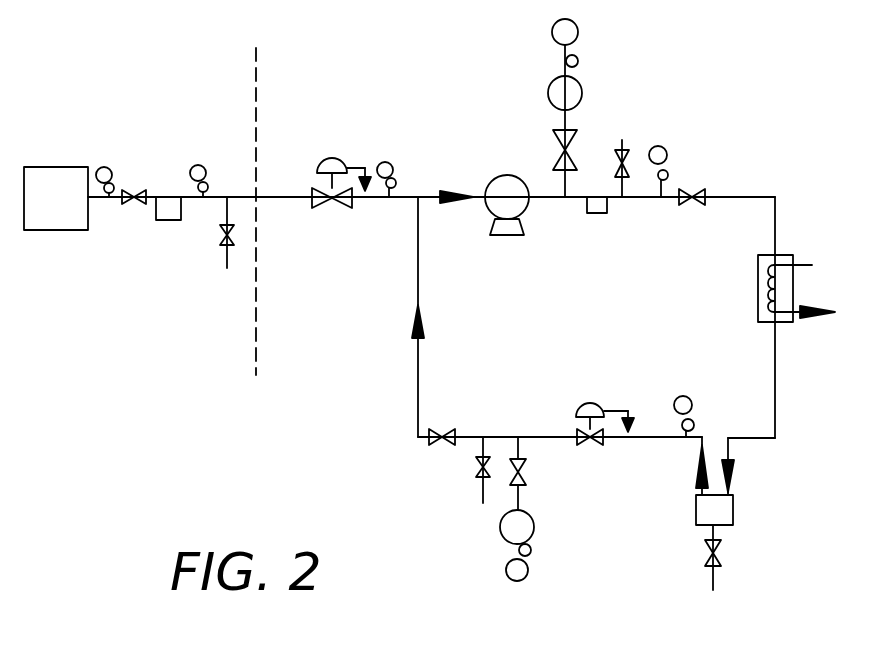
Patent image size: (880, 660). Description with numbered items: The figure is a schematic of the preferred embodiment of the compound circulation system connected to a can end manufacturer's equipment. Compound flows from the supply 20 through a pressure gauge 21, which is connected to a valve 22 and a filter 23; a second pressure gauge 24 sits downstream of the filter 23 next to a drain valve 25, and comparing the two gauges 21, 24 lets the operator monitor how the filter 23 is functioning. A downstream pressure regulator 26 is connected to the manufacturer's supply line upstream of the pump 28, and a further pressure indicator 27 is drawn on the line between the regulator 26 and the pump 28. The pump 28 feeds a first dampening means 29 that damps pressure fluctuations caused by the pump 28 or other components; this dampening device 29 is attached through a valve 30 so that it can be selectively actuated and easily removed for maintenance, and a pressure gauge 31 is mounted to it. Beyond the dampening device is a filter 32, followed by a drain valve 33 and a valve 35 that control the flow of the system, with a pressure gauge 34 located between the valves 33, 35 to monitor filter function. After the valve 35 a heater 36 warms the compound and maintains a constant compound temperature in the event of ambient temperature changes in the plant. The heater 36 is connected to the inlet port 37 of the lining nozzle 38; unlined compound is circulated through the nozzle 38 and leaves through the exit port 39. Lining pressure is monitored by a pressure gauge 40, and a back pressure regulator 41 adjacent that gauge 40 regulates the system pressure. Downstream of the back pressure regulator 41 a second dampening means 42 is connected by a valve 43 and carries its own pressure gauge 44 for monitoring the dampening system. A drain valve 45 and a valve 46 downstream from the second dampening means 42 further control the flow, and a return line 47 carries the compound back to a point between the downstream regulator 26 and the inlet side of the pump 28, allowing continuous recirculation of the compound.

The supply 20 is at (60, 232).
The pressure gauge 21 is at (105, 165).
The valve 22 is at (134, 188).
The filter 23 is at (170, 222).
The second pressure gauge 24 is at (199, 164).
The drain valve 25 is at (225, 245).
The downstream pressure regulator 26 is at (332, 157).
The pressure indicator 27 is at (385, 161).
The pump 28 is at (507, 236).
The first dampening means 29 is at (580, 88).
The valve 30 is at (577, 145).
The pressure gauge 31 is at (577, 28).
The filter 32 is at (597, 215).
The drain valve 33 is at (629, 148).
The pressure gauge 34 is at (665, 147).
The valve 35 is at (692, 189).
The heater 36 is at (795, 293).
The inlet port 37 is at (730, 452).
The lining nozzle 38 is at (722, 553).
The exit port 39 is at (700, 483).
The pressure gauge 40 is at (688, 395).
The back pressure regulator 41 is at (590, 403).
The second dampening means 42 is at (535, 523).
The valve 43 is at (527, 470).
The pressure gauge 44 is at (529, 572).
The drain valve 45 is at (483, 480).
The valve 46 is at (443, 445).
The return line 47 is at (418, 378).